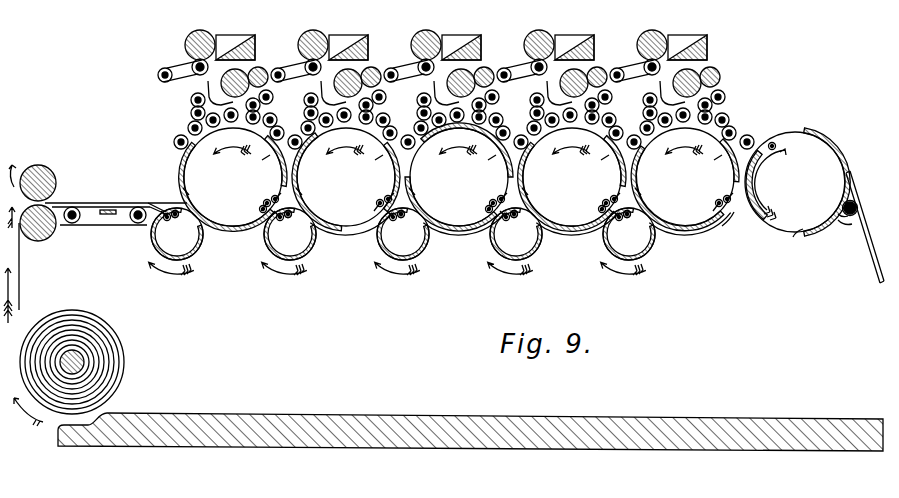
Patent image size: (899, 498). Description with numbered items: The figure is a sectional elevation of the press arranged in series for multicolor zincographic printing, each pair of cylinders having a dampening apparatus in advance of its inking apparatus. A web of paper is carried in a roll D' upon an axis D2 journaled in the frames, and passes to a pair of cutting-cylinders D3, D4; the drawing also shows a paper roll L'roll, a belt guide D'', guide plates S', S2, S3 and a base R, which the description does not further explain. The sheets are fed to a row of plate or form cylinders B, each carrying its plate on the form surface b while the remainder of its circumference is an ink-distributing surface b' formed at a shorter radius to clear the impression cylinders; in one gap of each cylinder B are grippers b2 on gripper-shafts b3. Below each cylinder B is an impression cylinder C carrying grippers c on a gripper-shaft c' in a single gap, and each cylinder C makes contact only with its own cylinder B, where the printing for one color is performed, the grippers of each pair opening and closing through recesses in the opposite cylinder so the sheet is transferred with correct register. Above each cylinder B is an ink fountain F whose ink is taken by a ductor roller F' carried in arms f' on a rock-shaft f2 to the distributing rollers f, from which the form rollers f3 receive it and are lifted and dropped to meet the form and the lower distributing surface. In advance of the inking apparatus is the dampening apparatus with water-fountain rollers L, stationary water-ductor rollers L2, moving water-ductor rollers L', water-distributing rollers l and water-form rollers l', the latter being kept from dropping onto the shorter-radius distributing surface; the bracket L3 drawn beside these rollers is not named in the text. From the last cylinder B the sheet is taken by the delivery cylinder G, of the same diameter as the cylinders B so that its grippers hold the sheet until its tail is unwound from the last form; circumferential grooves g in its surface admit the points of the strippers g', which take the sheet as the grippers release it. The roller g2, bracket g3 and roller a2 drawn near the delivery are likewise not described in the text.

The plate or form cylinder B is at (459, 177).
The impression cylinder C is at (402, 241).
The delivery cylinder G is at (797, 182).
The frame base R is at (470, 432).
The ink fountain F is at (446, 45).
The ductor roller F' is at (432, 67).
The arm f' is at (408, 71).
The rock-shaft f2 is at (405, 101).
The form roller f3 is at (441, 113).
The distributing roller f is at (419, 106).
The water-fountain roller L is at (461, 79).
The moving water-ductor roller L' is at (498, 95).
The stationary water-ductor roller L2 is at (486, 71).
The roller bracket L3 is at (440, 91).
The water-distributing roller l is at (479, 112).
The water-form roller l' is at (460, 137).
The plate or form surface b is at (415, 195).
The ink-distributing surface b' is at (488, 156).
The gripper b2 is at (429, 213).
The gripper-shaft b3 is at (497, 198).
The gripper c is at (393, 218).
The gripper-shaft c' is at (406, 218).
The guide plate S' is at (154, 202).
The guide plate S2 is at (520, 231).
The guide plate S3 is at (728, 227).
The roll D' is at (105, 215).
The belt guide D'' is at (115, 209).
The axis D2 is at (116, 220).
The cutting-cylinder D3 is at (38, 180).
The cutting-cylinder D4 is at (45, 225).
The circumferential groove g is at (797, 238).
The stripper g' is at (865, 227).
The delivery roller g2 is at (849, 217).
The roller bracket g3 is at (842, 223).
The roller a2 is at (779, 146).
The paper roll L'roll is at (65, 316).